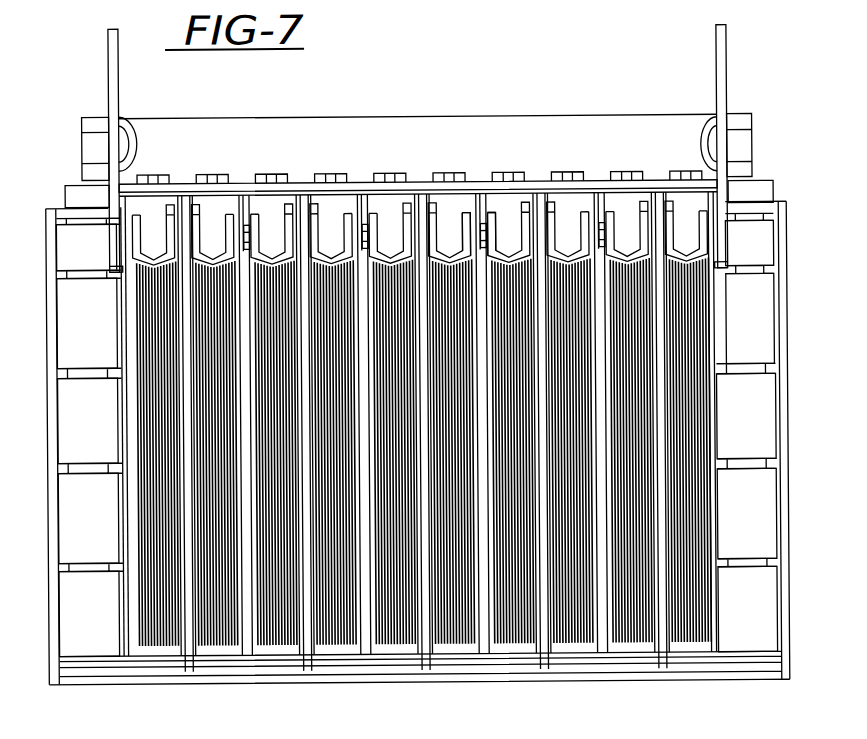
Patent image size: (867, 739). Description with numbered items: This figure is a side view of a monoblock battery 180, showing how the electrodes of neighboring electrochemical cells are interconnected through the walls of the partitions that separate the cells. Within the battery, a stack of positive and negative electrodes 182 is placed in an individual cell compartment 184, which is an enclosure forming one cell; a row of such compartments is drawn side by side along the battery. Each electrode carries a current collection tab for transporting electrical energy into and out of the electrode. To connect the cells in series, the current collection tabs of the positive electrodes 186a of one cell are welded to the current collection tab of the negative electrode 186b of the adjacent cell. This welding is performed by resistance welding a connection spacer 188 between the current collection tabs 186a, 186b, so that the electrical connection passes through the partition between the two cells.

The monoblock battery 180 is at (795, 221).
The positive and negative electrodes 182 is at (142, 297).
The individual cell compartment 184 is at (333, 210).
The current collection tabs of the positive electrodes 186a is at (457, 220).
The current collection tab of the negative electrode 186b is at (500, 221).
The connection spacer 188 is at (483, 221).